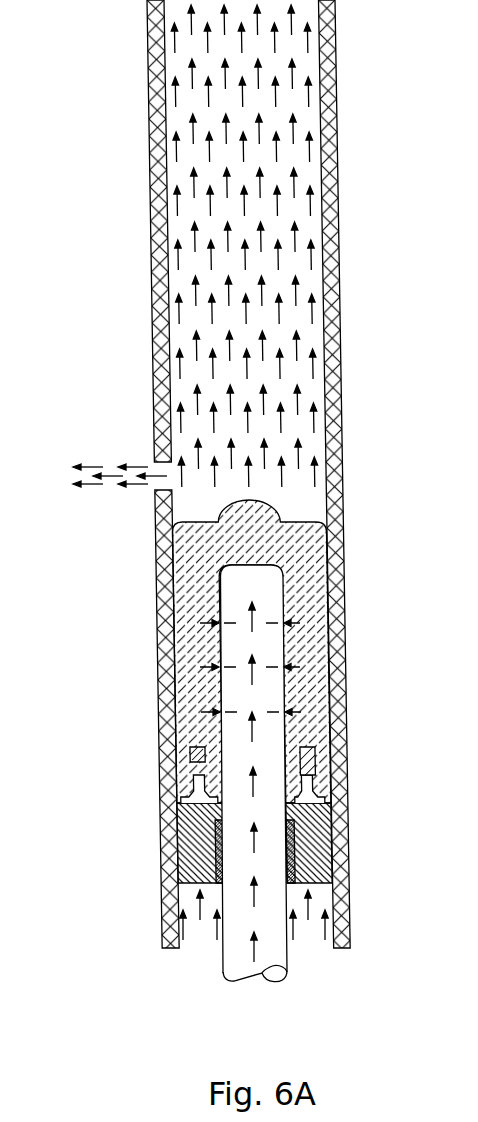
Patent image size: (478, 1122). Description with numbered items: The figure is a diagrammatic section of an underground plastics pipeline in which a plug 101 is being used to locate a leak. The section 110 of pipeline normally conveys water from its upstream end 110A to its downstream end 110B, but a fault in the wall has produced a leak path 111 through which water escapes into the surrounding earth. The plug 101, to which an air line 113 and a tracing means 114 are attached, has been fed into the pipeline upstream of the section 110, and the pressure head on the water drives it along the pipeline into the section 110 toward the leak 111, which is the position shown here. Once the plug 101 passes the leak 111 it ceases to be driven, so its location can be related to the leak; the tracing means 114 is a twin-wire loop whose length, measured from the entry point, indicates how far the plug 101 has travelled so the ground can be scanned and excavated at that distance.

The plug 101 is at (193, 602).
The section of pipeline 110 is at (165, 813).
The upstream end 110A is at (192, 925).
The downstream end 110B is at (185, 50).
The leak path 111 is at (155, 463).
The air line 113 is at (222, 900).
The tracing means 114 is at (274, 987).